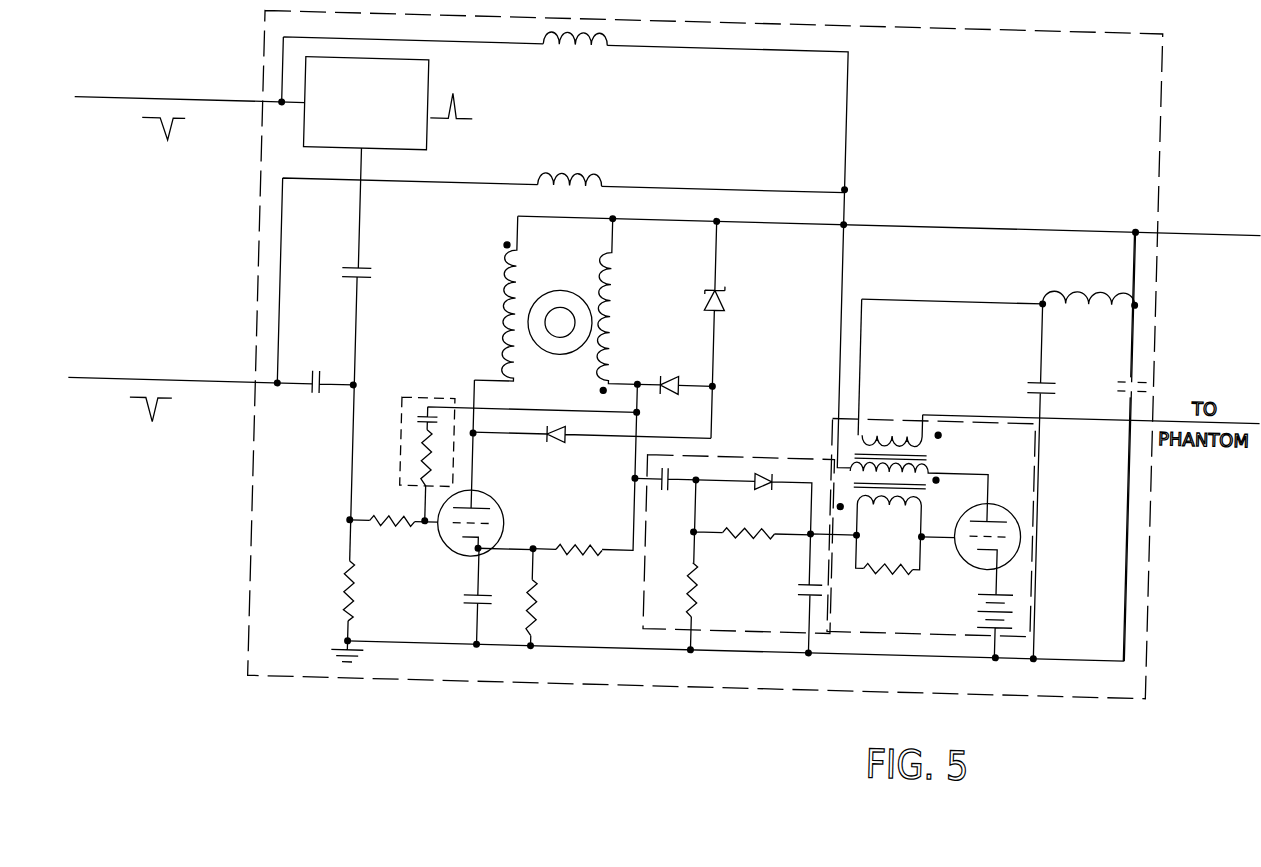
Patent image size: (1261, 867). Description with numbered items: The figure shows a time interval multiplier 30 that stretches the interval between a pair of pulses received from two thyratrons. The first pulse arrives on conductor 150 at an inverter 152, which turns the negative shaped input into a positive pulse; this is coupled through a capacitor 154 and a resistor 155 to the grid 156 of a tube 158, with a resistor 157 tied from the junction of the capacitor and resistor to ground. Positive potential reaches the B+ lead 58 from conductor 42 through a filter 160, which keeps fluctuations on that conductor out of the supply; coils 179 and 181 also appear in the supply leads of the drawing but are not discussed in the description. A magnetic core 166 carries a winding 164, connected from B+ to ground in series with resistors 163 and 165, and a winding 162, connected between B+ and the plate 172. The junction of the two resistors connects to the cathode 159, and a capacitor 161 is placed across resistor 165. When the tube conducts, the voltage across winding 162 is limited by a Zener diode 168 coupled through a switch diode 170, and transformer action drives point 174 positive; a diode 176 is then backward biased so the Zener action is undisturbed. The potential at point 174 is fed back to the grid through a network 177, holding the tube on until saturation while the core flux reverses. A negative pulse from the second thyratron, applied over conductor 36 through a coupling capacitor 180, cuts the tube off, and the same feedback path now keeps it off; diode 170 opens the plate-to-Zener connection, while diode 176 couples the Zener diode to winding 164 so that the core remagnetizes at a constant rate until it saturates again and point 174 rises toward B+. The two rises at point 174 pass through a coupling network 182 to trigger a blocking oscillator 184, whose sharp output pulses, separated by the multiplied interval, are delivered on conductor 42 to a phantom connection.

The time interval multiplier 30 is at (583, 688).
The conductor 150 is at (109, 116).
The inverter 152 is at (418, 82).
The inductor 179 is at (591, 53).
The inductor 181 is at (579, 186).
The capacitor 154 is at (369, 281).
The conductor 36 is at (192, 394).
The coupling capacitor 180 is at (320, 405).
The B+ lead 58 is at (1191, 225).
The winding 162 is at (502, 295).
The winding 164 is at (614, 285).
The magnetic core 166 is at (572, 293).
The Zener diode 168 is at (726, 304).
The switch diode 170 is at (557, 446).
The point 174 is at (637, 386).
The diode 176 is at (675, 394).
The network 177 is at (433, 404).
The tube 158 is at (478, 525).
The plate 172 is at (475, 504).
The grid 156 is at (455, 530).
The cathode 159 is at (474, 549).
The resistor 155 is at (403, 525).
The resistor 157 is at (357, 589).
The capacitor 161 is at (475, 606).
The resistor 165 is at (542, 624).
The resistor 163 is at (589, 554).
The coupling network 182 is at (781, 451).
The blocking oscillator 184 is at (899, 425).
The conductor 42 is at (1000, 410).
The filter 160 is at (1103, 334).